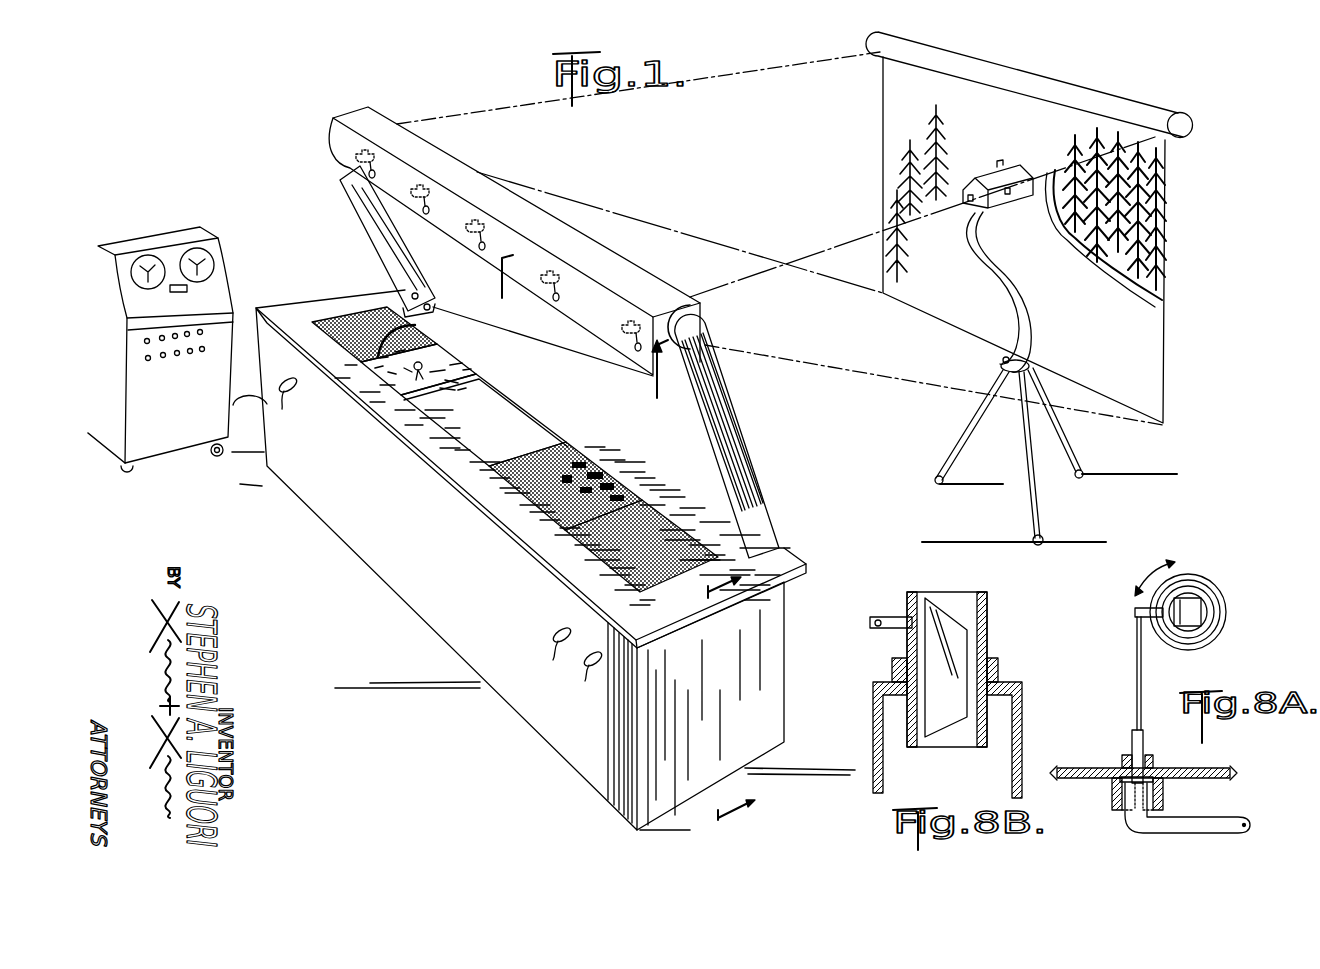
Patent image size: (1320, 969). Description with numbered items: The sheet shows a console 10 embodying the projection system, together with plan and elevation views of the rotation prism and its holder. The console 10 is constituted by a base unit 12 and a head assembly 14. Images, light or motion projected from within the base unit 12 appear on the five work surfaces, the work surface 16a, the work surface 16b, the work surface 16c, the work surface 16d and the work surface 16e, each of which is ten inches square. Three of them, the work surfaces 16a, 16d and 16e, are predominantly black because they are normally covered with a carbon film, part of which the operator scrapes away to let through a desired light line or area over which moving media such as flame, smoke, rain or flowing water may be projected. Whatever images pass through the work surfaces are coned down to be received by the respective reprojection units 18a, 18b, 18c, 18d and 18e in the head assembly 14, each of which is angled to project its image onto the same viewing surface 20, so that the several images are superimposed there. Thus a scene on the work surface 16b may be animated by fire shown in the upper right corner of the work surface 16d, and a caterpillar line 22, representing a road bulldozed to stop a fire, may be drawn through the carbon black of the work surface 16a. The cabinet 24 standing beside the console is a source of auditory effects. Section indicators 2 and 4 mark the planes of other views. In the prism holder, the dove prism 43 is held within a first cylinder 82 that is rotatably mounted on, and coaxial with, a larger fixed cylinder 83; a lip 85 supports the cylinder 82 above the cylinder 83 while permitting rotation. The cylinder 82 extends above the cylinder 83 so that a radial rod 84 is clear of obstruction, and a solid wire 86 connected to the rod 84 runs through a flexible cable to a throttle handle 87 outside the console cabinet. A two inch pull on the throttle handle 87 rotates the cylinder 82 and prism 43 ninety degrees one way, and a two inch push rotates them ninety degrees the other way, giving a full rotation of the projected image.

In FIG. 1, the section line 2- 2 is at (715, 711).
In FIG. 1, the section line 4- 4 is at (579, 349).
In FIG. 1, the console 10 is at (767, 458).
In FIG. 1, the base unit 12 is at (764, 665).
In FIG. 1, the head assembly 14 is at (433, 155).
In FIG. 1, the work surface 16a is at (337, 322).
In FIG. 1, the work surface 16b is at (393, 377).
In FIG. 1, the work surface 16c is at (463, 425).
In FIG. 1, the work surface 16d is at (527, 480).
In FIG. 1, the work surface 16e is at (607, 535).
In FIG. 1, the reprojection unit 18a is at (358, 178).
In FIG. 1, the reprojection unit 18b is at (435, 185).
In FIG. 1, the reprojection unit 18c is at (463, 237).
In FIG. 1, the reprojection unit 18d is at (540, 293).
In FIG. 1, the reprojection unit 18e is at (614, 338).
In FIG. 1, the viewing surface 20 is at (1152, 368).
In FIG. 1, the caterpillar line 22 is at (414, 328).
In FIG. 1, the cabinet 24 is at (167, 235).
In FIG. 8B, the dove prism 43 is at (933, 647).
In FIG. 8A, the dove prism 43 is at (1193, 607).
In FIG. 8B, the first cylinder 82 is at (987, 613).
In FIG. 8A, the first cylinder 82 is at (1223, 625).
In FIG. 8B, the fixed cylinder 83 is at (1023, 713).
In FIG. 8A, the fixed cylinder 83 is at (1187, 648).
In FIG. 8B, the radial rod 84 is at (890, 617).
In FIG. 8A, the radial rod 84 is at (1137, 608).
In FIG. 8B, the lip 85 is at (1000, 663).
In FIG. 8A, the lip 85 is at (1207, 642).
In FIG. 8A, the solid wire 86 is at (1138, 668).
In FIG. 1, the throttle handle 87 is at (588, 671).
In FIG. 8A, the throttle handle 87 is at (1212, 821).